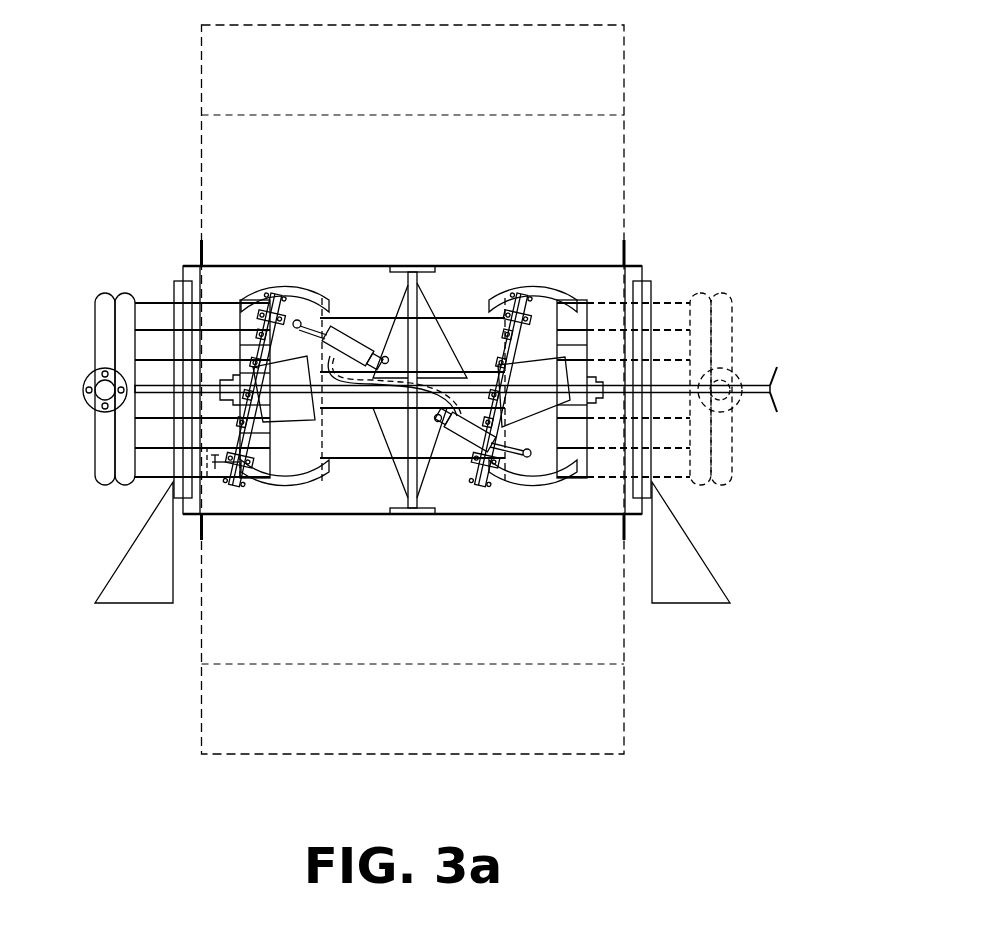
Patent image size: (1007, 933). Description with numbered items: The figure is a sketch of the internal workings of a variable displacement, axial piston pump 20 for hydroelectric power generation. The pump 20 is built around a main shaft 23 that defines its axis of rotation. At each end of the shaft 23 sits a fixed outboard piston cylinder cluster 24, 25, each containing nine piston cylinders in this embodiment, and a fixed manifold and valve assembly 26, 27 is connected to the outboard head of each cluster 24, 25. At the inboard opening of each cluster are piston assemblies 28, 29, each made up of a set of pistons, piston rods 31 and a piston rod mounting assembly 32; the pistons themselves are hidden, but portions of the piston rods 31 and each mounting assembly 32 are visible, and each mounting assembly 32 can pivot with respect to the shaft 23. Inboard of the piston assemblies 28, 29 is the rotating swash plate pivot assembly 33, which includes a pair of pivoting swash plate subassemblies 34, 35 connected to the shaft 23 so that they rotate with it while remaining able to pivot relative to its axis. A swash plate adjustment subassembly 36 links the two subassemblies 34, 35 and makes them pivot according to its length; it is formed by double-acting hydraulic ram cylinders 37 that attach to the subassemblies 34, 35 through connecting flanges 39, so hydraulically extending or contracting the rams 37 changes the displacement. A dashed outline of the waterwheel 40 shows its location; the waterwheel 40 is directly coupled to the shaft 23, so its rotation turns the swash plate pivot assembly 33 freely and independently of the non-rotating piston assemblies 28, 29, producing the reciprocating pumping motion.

The pump 20 is at (752, 133).
The main shaft 23 is at (422, 268).
The piston cylinder cluster 24 is at (153, 290).
The piston cylinder cluster 25 is at (667, 290).
The manifold and valve assembly 26 is at (123, 287).
The manifold and valve assembly 27 is at (705, 290).
The piston assembly 28 is at (258, 445).
The piston assembly 29 is at (556, 330).
The piston rods 31 is at (578, 312).
The piston rod mounting assembly 32 is at (325, 478).
The rotating swash plate pivot assembly 33 is at (368, 345).
The pivoting swash plate subassembly 34 is at (348, 475).
The pivoting swash plate subassembly 35 is at (485, 365).
The swash plate adjustment subassembly 36 is at (493, 350).
The hydraulic ram cylinders 37 is at (357, 297).
The connecting flanges 39 is at (455, 430).
The waterwheel 40 is at (530, 88).